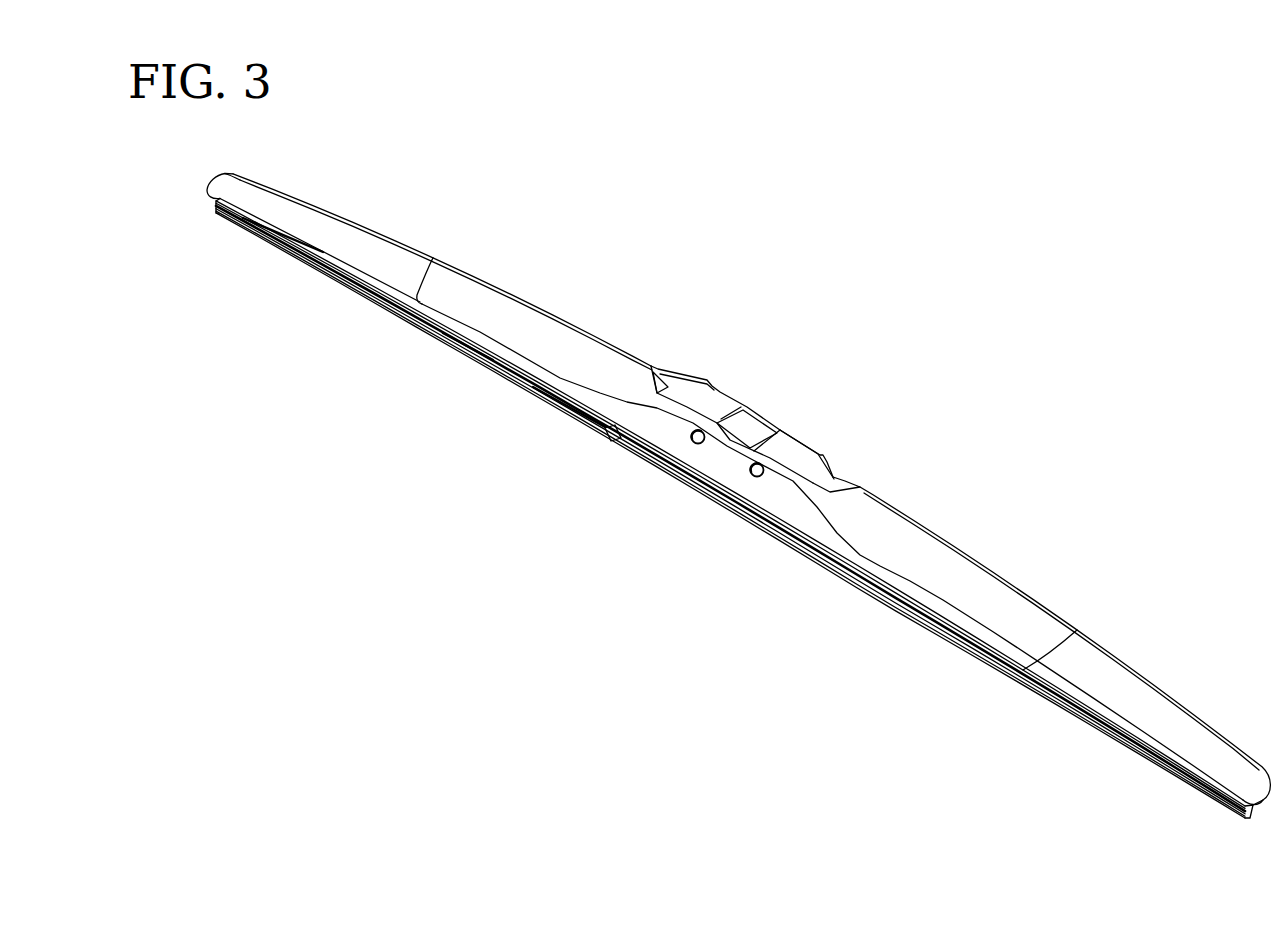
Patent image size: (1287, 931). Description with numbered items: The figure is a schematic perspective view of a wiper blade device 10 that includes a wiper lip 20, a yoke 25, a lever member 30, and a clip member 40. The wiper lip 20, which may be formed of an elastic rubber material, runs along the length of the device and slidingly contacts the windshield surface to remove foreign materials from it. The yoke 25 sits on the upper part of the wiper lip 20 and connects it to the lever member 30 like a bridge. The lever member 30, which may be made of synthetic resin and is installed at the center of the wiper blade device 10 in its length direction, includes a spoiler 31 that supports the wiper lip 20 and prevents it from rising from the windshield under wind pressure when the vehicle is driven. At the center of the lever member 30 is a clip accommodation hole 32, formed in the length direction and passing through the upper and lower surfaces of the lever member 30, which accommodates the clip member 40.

The wiper blade device 10 is at (738, 496).
The wiper lip 20 is at (734, 509).
The yoke 25 is at (607, 437).
The lever member 30 is at (741, 499).
The spoiler 31 is at (550, 332).
The clip accommodation hole 32 is at (833, 477).
The clip member 40 is at (800, 452).